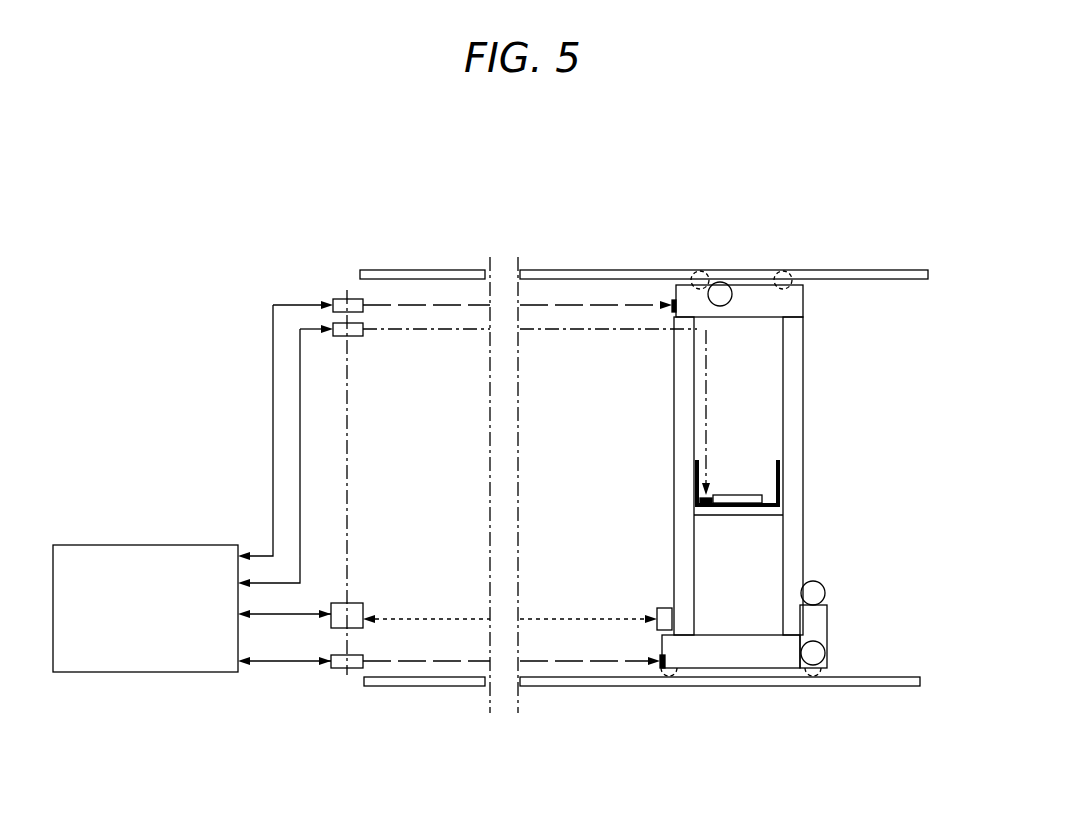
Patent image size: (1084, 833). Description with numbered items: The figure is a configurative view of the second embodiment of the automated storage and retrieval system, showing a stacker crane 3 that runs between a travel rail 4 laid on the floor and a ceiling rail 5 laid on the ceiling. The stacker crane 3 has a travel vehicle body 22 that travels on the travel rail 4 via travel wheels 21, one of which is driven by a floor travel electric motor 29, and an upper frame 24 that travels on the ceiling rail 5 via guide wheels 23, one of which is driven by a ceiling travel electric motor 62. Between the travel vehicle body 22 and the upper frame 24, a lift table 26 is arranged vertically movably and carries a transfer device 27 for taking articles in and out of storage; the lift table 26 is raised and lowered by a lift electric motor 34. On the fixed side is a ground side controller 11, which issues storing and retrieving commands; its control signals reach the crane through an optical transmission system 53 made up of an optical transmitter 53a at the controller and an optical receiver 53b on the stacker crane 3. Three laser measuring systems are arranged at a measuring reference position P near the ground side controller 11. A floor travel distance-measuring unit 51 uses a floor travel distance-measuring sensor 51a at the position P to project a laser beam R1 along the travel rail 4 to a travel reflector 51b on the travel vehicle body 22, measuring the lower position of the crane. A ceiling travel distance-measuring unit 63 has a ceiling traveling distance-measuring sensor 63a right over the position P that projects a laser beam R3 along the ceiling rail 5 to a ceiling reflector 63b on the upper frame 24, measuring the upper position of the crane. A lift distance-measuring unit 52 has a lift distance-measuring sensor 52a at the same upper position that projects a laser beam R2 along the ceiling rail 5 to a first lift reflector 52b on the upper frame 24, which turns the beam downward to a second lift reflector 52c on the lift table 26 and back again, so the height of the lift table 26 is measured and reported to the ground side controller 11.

The stacker crane 3 is at (825, 450).
The travel rail 4 is at (580, 688).
The ceiling rail 5 is at (553, 269).
The ground side controller 11 is at (141, 541).
The travel wheels 21 is at (677, 683).
The travel vehicle body 22 is at (767, 652).
The guide wheels 23 is at (782, 282).
The upper frame 24 is at (795, 317).
The lift table 26 is at (740, 526).
The transfer device 27 is at (736, 495).
The floor travel electric motor 29 is at (826, 652).
The lift electric motor 34 is at (826, 590).
The floor travel distance-measuring unit 51 is at (348, 684).
The floor travel distance-measuring sensor 51a is at (333, 668).
The travel reflector 51b is at (662, 673).
The lift distance-measuring unit 52 is at (378, 342).
The lift distance-measuring sensor 52a is at (350, 337).
The first lift reflector 52b is at (701, 336).
The second lift reflector 52c is at (700, 500).
The optical transmission system 53 is at (401, 598).
The optical transmitter 53a is at (352, 602).
The optical receiver 53b is at (660, 608).
The ceiling travel electric motor 62 is at (728, 306).
The ceiling travel distance-measuring unit 63 is at (386, 291).
The ceiling traveling distance-measuring sensor 63a is at (346, 298).
The ceiling reflector 63b is at (672, 300).
The measuring reference position P is at (349, 462).
The laser beam R1 is at (432, 660).
The laser beam R2 is at (565, 332).
The laser beam R3 is at (476, 300).